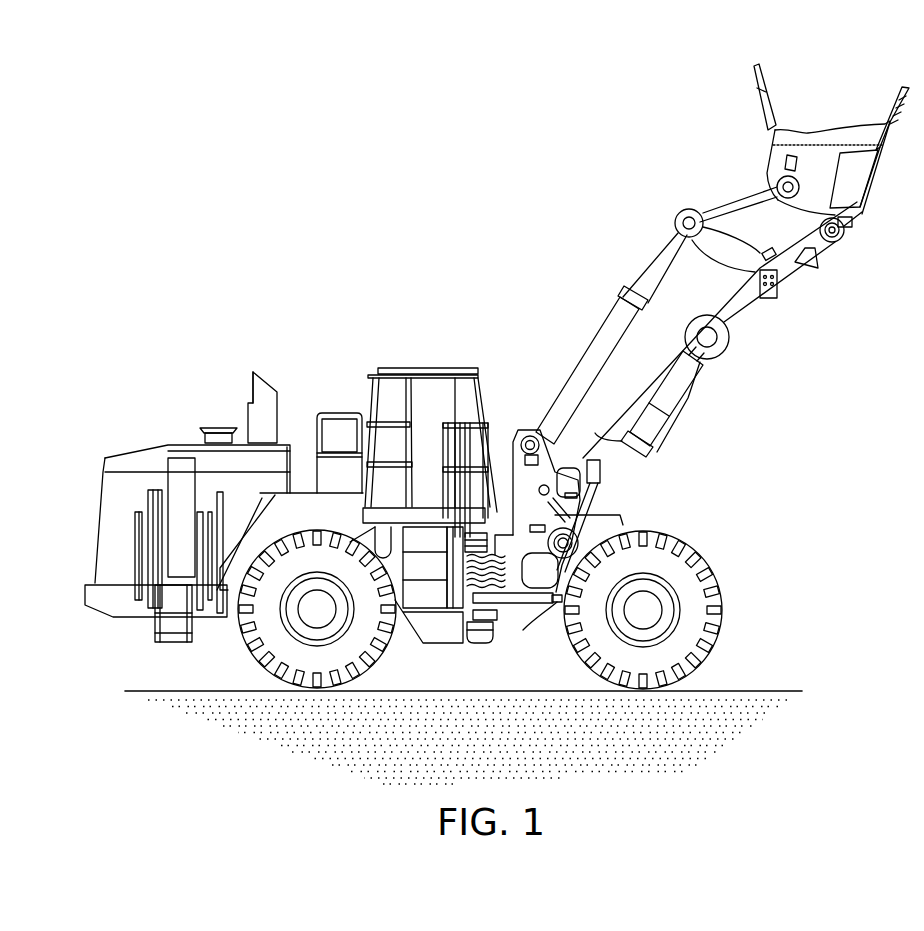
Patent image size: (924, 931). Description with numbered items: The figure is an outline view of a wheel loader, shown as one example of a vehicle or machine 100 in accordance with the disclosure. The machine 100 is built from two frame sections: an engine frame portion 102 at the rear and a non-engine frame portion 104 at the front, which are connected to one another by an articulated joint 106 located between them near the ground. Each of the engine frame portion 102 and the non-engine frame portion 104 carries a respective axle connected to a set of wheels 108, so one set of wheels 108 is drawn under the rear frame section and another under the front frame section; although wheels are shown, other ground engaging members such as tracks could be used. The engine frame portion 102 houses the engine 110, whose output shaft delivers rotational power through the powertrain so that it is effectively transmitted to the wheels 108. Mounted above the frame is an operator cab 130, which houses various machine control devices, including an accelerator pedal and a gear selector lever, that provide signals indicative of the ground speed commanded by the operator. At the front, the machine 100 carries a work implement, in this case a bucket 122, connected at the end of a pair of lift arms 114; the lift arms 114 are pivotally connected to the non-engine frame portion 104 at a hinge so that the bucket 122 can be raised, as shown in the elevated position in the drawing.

The vehicle or machine 100 is at (587, 135).
The engine frame portion 102 is at (195, 377).
The non-engine frame portion 104 is at (523, 632).
The articulated joint 106 is at (483, 655).
The wheels 108 is at (393, 622).
The engine 110 is at (185, 445).
The lift arms 114 is at (738, 316).
The bucket 122 is at (803, 137).
The operator cab 130 is at (420, 368).